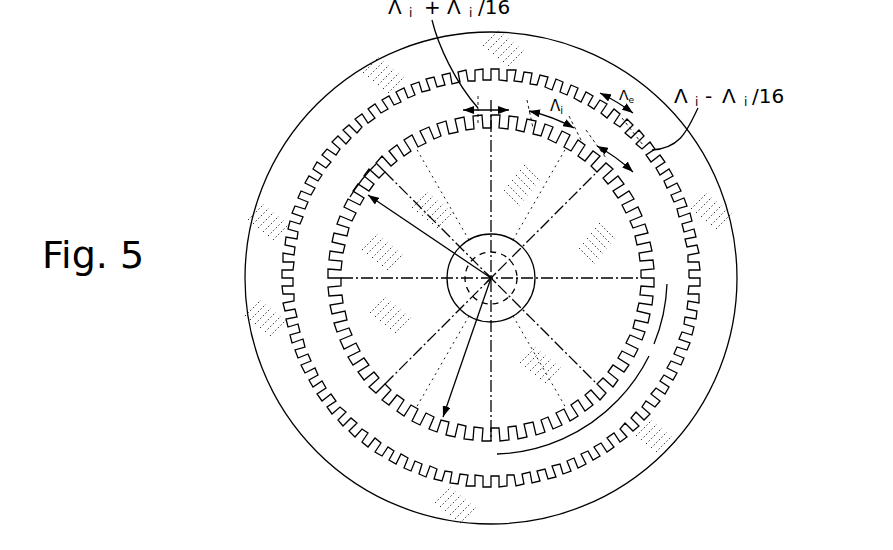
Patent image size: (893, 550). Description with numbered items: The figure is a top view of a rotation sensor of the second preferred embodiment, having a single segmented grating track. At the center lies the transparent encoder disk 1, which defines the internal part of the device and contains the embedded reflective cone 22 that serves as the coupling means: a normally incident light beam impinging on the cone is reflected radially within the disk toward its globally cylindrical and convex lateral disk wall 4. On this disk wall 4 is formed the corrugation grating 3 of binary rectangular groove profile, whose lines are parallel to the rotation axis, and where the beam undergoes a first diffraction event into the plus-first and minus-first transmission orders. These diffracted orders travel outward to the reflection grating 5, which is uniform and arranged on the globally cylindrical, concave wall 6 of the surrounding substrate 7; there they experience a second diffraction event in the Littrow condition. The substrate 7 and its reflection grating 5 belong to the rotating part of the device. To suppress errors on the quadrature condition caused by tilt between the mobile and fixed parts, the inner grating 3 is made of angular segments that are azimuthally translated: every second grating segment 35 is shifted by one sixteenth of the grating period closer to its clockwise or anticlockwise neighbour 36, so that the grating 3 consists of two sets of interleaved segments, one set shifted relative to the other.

The transparent encoder disk 1 is at (425, 383).
The corrugation grating 3 is at (333, 263).
The disk wall 4 is at (337, 208).
The reflection grating 5 is at (703, 285).
The wall 6 is at (707, 262).
The substrate 7 is at (283, 377).
The embedded reflective cone 22 is at (531, 302).
The grating segment 35 is at (654, 344).
The neighbour 36 is at (571, 435).